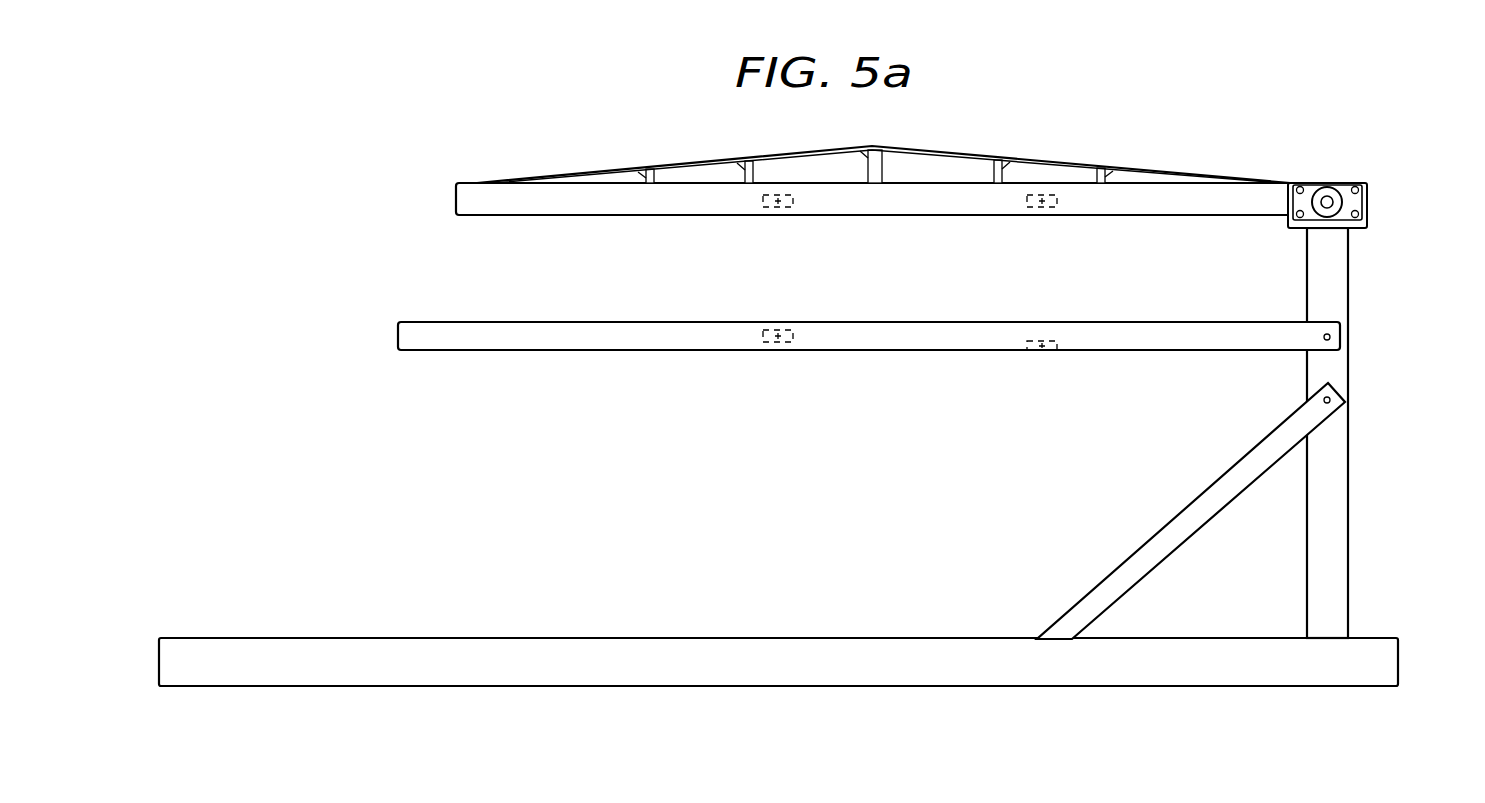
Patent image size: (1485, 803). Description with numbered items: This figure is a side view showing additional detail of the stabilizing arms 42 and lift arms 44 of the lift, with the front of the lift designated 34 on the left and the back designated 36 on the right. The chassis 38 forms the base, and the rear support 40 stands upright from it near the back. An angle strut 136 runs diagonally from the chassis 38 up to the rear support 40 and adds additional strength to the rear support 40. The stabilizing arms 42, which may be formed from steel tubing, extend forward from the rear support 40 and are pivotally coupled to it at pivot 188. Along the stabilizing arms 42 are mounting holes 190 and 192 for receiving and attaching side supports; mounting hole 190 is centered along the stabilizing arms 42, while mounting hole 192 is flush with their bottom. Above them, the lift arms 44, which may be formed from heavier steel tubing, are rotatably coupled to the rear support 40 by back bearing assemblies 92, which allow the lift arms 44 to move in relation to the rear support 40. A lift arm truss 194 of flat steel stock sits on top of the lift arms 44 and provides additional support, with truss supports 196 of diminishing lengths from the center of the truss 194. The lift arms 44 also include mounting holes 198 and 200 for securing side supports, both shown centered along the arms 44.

The front of lift 34 is at (192, 466).
The back of lift 36 is at (1408, 418).
The chassis 38 is at (602, 688).
The rear support 40 is at (1350, 563).
The stabilizing arms 42 is at (1170, 352).
The lift arms 44 is at (940, 218).
The back bearing assemblies 92 is at (1345, 189).
The angle strut 136 is at (1180, 548).
The pivot 188 is at (1332, 337).
The mounting hole 190 is at (780, 343).
The mounting hole 192 is at (1042, 351).
The lift arm truss 194 is at (971, 138).
The truss supports 196 is at (1133, 158).
The mounting hole 198 is at (776, 209).
The mounting hole 200 is at (1045, 209).